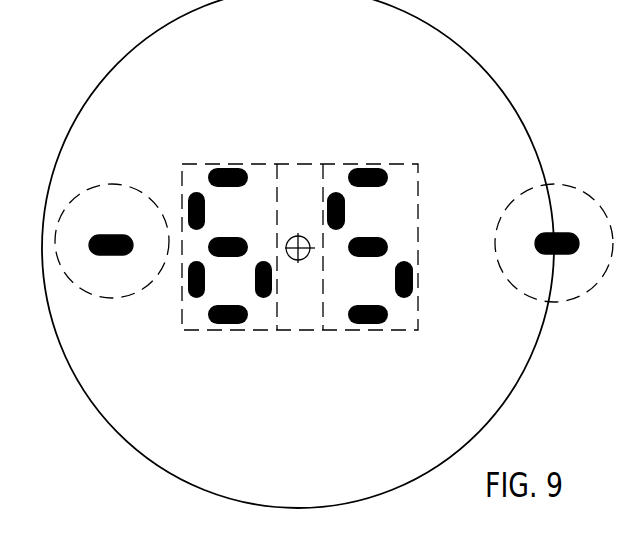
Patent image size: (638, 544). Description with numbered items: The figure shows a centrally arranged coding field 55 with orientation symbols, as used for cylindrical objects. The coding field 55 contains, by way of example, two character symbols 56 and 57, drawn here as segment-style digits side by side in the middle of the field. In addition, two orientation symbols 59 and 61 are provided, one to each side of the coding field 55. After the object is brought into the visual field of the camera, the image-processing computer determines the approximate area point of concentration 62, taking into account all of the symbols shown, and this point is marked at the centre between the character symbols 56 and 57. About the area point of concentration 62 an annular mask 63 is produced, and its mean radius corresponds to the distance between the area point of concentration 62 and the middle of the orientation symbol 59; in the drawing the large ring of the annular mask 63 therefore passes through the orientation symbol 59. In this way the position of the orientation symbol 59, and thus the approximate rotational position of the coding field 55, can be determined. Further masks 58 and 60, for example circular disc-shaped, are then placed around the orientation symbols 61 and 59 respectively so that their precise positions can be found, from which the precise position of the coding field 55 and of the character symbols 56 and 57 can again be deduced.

The coding field 55 is at (305, 186).
The character symbol 56 is at (182, 181).
The character symbol 57 is at (403, 197).
The circular disc-shaped mask 58 is at (105, 183).
The orientation symbol 59 is at (562, 233).
The circular disc-shaped mask 60 is at (550, 303).
The orientation symbol 61 is at (108, 256).
The area point of concentration 62 is at (298, 260).
The annular mask 63 is at (480, 62).